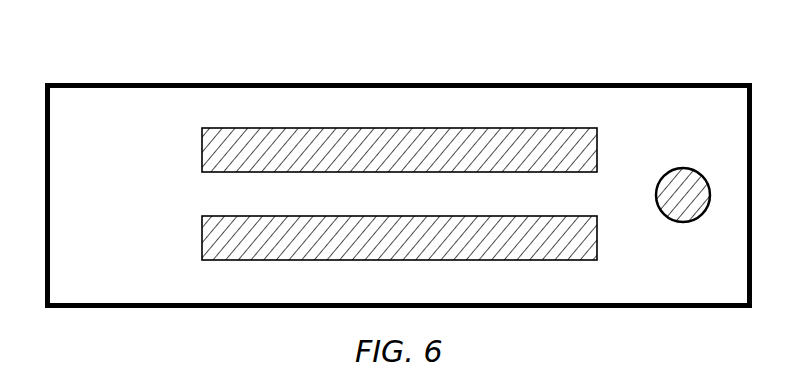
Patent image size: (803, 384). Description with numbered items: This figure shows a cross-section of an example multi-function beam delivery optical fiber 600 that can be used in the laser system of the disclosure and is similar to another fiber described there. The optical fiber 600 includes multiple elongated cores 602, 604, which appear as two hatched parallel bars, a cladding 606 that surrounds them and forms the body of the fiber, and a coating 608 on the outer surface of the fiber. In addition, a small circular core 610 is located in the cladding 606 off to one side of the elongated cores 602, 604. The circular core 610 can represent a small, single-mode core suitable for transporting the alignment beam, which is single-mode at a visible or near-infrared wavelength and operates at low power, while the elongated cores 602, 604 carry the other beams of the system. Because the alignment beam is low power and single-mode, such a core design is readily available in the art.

The optical fiber 600 is at (398, 157).
The elongated core 602 is at (597, 151).
The elongated core 604 is at (202, 243).
The cladding 606 is at (167, 100).
The coating 608 is at (408, 83).
The circular core 610 is at (680, 222).